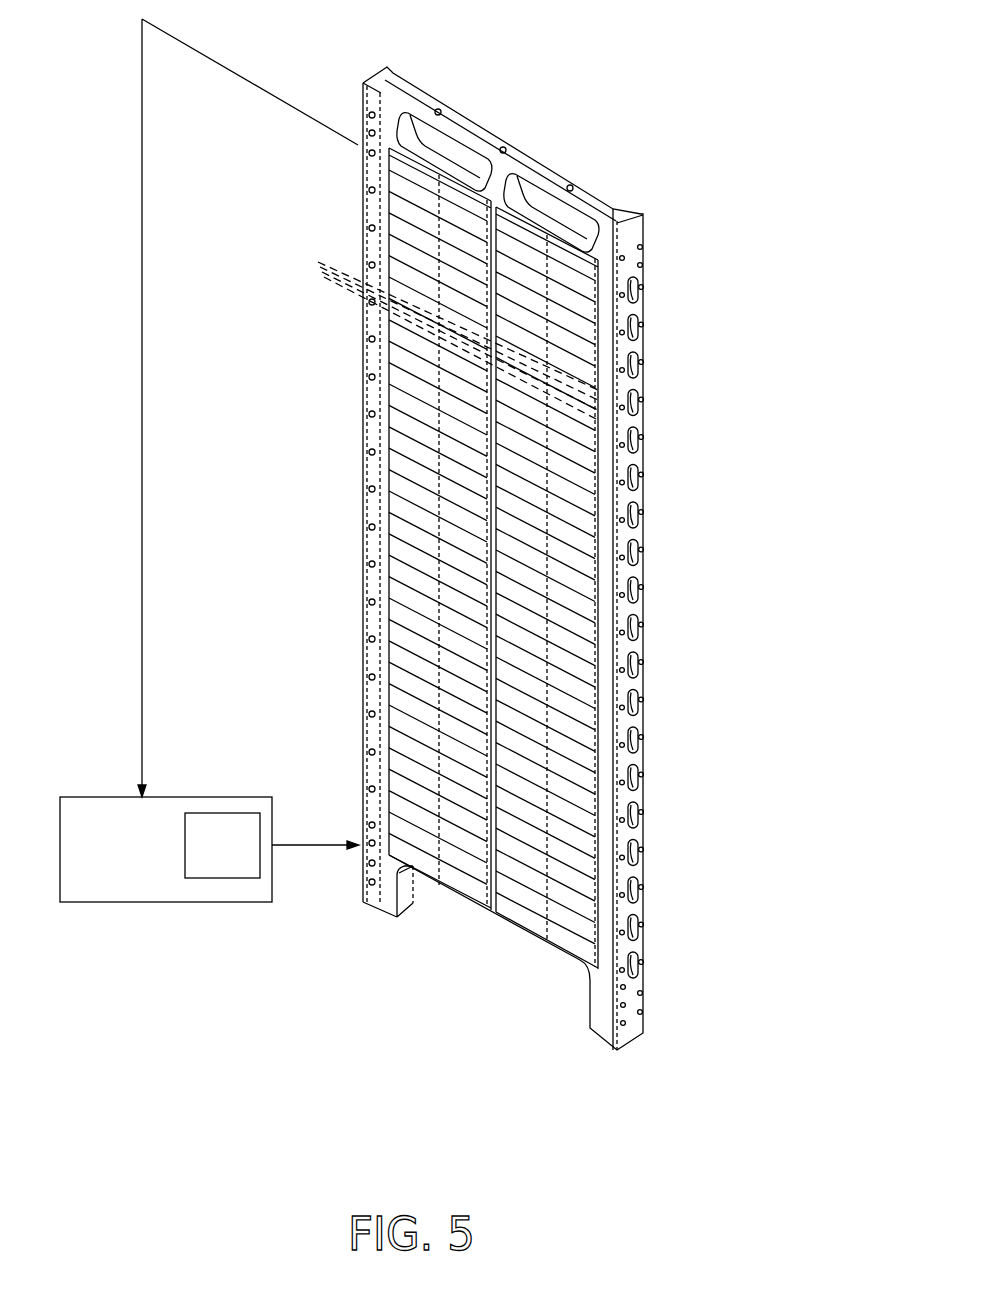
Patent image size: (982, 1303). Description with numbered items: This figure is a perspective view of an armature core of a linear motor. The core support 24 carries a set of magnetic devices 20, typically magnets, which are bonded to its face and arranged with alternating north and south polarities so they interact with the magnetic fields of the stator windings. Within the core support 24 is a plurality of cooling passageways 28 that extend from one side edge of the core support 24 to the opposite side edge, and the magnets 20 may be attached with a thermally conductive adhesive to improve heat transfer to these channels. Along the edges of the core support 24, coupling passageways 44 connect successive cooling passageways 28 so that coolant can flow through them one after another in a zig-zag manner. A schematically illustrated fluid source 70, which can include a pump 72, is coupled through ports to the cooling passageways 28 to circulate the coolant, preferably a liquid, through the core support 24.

The magnetic devices 20 is at (573, 280).
The core support 24 is at (613, 202).
The cooling passageways 28 is at (314, 264).
The coupling passageways 44 is at (637, 367).
The fluid source 70 is at (209, 460).
The pump 72 is at (222, 845).